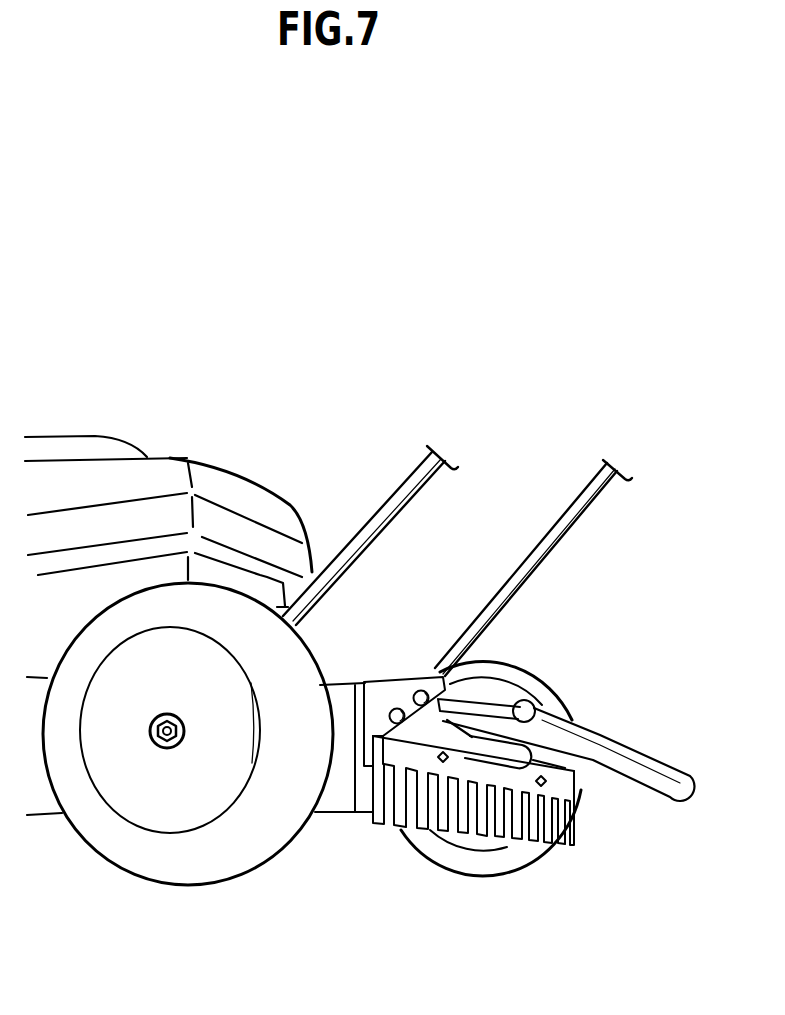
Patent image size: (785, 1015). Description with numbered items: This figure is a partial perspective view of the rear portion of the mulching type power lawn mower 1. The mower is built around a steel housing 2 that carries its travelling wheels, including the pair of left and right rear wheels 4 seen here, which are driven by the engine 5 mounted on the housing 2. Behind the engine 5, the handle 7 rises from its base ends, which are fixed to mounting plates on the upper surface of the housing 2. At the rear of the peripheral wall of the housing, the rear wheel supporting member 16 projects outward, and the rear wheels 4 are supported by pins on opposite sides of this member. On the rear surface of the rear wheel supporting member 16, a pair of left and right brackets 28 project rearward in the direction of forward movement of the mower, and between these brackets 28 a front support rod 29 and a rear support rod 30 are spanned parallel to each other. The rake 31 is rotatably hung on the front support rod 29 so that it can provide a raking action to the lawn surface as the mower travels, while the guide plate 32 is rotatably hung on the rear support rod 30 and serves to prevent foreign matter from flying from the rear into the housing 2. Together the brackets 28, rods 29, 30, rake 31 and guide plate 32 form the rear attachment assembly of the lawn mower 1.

The power lawn mower 1 is at (118, 423).
The housing 2 is at (47, 816).
The rear wheels 4 is at (183, 857).
The engine 5 is at (247, 493).
The handle 7 is at (412, 485).
The rear wheel supporting member 16 is at (343, 712).
The brackets 28 is at (400, 675).
The front support rod 29 is at (392, 711).
The rear support rod 30 is at (446, 672).
The rake 31 is at (572, 828).
The guide plate 32 is at (642, 762).